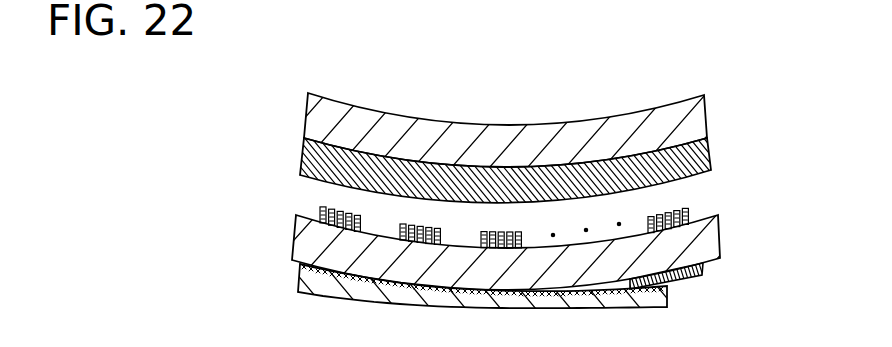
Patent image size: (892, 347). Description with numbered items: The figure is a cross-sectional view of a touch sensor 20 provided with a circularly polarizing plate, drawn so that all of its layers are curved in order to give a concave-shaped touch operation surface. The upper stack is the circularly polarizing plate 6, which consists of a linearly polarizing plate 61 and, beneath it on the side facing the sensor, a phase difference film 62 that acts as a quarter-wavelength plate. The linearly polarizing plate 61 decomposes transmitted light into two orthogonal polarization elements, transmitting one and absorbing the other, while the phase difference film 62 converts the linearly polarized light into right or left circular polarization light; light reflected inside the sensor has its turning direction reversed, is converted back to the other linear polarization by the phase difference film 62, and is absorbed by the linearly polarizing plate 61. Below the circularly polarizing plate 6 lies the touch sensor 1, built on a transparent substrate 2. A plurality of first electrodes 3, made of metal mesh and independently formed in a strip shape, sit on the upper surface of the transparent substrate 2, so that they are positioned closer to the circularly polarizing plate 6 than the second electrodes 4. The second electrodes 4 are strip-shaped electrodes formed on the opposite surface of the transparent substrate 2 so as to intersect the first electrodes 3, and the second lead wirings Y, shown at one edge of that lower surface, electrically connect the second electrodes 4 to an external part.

The touch sensor 20 is at (247, 137).
The circularly polarizing plate 6 is at (788, 92).
The linearly polarizing plate 61 is at (693, 109).
The phase difference film 62 is at (690, 147).
The touch sensor 1 is at (797, 196).
The transparent substrate 2 is at (722, 232).
The first electrodes 3 is at (690, 202).
The second electrodes 4 is at (300, 277).
The second lead wirings Y is at (703, 266).